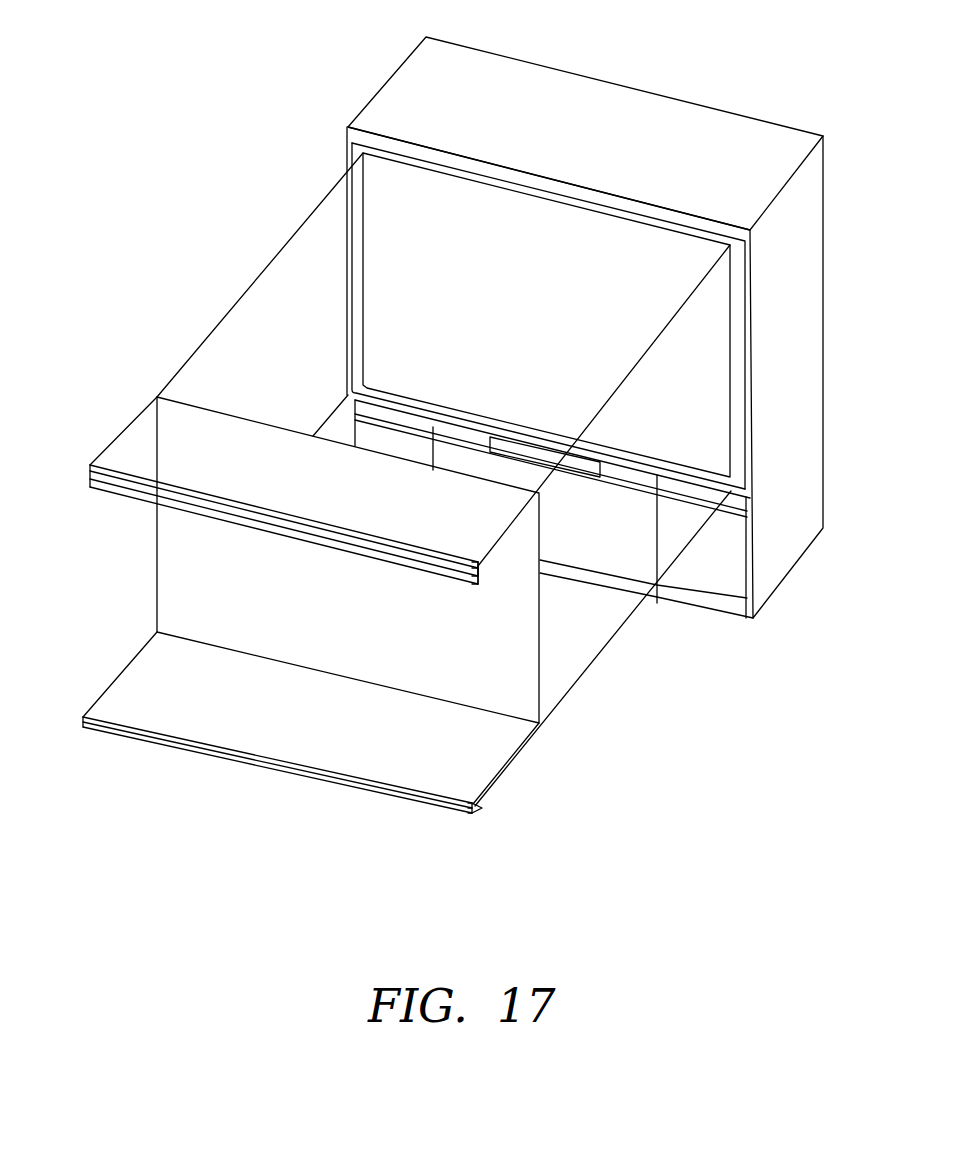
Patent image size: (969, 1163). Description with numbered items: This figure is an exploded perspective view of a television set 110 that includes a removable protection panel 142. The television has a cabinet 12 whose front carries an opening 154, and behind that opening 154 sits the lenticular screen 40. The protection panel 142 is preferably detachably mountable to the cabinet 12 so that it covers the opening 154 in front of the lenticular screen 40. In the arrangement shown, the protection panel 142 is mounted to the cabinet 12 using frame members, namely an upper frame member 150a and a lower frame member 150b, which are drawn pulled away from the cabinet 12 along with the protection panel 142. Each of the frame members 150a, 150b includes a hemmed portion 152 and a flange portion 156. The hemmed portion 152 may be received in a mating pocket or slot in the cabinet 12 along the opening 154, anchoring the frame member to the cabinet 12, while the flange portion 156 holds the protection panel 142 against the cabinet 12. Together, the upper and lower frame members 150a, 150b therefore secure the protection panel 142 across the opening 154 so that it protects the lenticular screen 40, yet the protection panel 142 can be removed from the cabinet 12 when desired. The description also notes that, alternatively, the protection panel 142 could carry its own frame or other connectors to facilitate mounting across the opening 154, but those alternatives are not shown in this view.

The display cabinet assembly with slide-out panel 110 is at (272, 113).
The cabinet 12 is at (641, 96).
The lenticular screen 40 is at (393, 215).
The opening 154 is at (362, 283).
The protection panel 142 is at (157, 563).
The upper frame member 150a is at (88, 472).
The lower frame member 150b is at (82, 720).
The hemmed portion 152 is at (478, 568).
The flange portion 156 is at (478, 576).